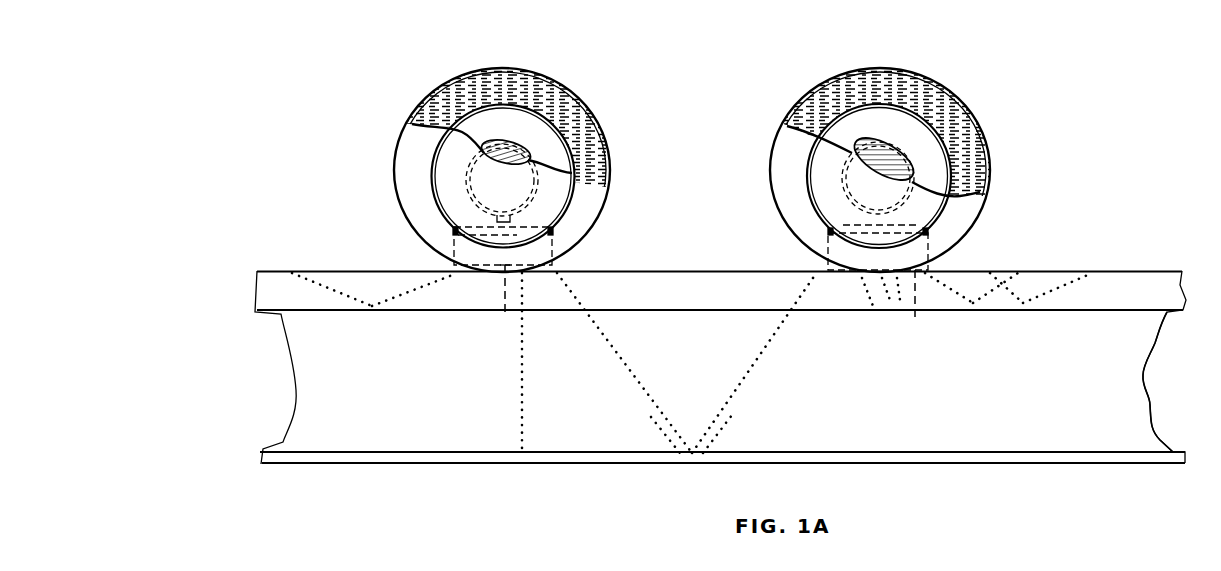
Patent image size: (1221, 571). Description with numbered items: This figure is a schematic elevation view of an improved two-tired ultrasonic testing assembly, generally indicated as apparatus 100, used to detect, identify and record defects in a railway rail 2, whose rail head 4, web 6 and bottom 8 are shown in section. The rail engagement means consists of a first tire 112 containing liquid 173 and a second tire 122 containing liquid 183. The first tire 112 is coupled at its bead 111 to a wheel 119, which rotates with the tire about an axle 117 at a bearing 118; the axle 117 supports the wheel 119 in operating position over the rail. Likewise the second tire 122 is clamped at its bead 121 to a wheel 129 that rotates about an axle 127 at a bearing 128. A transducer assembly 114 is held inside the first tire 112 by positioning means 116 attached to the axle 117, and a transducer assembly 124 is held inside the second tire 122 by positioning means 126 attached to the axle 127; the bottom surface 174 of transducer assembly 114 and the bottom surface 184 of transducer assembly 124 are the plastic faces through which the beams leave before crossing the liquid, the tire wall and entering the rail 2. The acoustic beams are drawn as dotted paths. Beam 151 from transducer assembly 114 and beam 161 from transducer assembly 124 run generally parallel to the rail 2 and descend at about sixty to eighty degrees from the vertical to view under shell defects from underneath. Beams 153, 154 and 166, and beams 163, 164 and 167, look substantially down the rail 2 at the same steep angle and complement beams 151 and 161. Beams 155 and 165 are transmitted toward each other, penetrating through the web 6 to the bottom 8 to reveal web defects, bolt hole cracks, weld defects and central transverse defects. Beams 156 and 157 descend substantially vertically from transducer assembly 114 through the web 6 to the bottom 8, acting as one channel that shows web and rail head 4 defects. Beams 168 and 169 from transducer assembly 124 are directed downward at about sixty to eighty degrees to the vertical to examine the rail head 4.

The improved apparatus 100 is at (670, 100).
The rail 2 is at (1011, 399).
The rail head 4 is at (1137, 283).
The web 6 is at (1138, 390).
The bottom 8 is at (1107, 458).
The bead 111 is at (455, 128).
The first tire 112 is at (411, 140).
The transducer assembly 114 is at (454, 248).
The positioning means 116 is at (528, 217).
The axle 117 is at (572, 173).
The bearing 118 is at (520, 143).
The wheel 119 is at (492, 122).
The bead 121 is at (830, 122).
The second tire 122 is at (781, 151).
The transducer assembly 124 is at (920, 246).
The positioning means 126 is at (903, 223).
The axle 127 is at (915, 167).
The bearing 128 is at (892, 142).
The wheel 129 is at (855, 120).
The acoustic beam 151 is at (331, 290).
The acoustic beam 153 is at (400, 327).
The acoustic beam 154 is at (400, 327).
The beam 155 is at (624, 363).
The beam 156 is at (459, 362).
The beam 157 is at (522, 397).
The acoustic beam 161 is at (1040, 295).
The acoustic beam 163 is at (1004, 321).
The acoustic beam 164 is at (1004, 321).
The beam 165 is at (766, 361).
The acoustic beam 166 is at (450, 300).
The reflected light ray 167 is at (1033, 298).
The beam 168 is at (851, 314).
The beam 169 is at (873, 297).
The liquid 173 is at (576, 115).
The bottom surface 174 is at (509, 305).
The liquid 183 is at (960, 110).
The bottom surface 184 is at (922, 306).